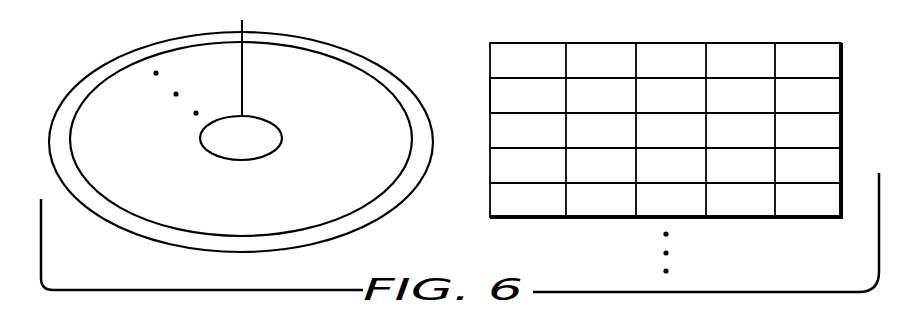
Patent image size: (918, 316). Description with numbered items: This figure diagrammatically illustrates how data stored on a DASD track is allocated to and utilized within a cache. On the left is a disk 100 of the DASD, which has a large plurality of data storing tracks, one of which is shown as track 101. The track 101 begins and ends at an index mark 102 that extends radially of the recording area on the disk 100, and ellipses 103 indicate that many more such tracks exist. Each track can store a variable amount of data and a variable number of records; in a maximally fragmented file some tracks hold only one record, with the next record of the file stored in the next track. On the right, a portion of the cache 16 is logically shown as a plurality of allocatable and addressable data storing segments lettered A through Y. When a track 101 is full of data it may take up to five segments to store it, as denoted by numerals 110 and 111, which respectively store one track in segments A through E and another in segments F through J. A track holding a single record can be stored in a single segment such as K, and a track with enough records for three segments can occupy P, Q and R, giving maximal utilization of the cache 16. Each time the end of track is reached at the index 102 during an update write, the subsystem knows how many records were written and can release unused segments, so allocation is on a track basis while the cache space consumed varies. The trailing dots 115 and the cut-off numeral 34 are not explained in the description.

The disk 100 is at (369, 58).
The track 101 is at (123, 64).
The index mark 102 is at (242, 40).
The ellipses 103 is at (173, 97).
The cache segments storing a track 110 is at (490, 58).
The cache segments storing a track 111 is at (490, 93).
The additional matrix indicator dots 115 is at (670, 255).
The cache 16 is at (780, 38).
The element of adjacent figure 34 is at (128, 315).